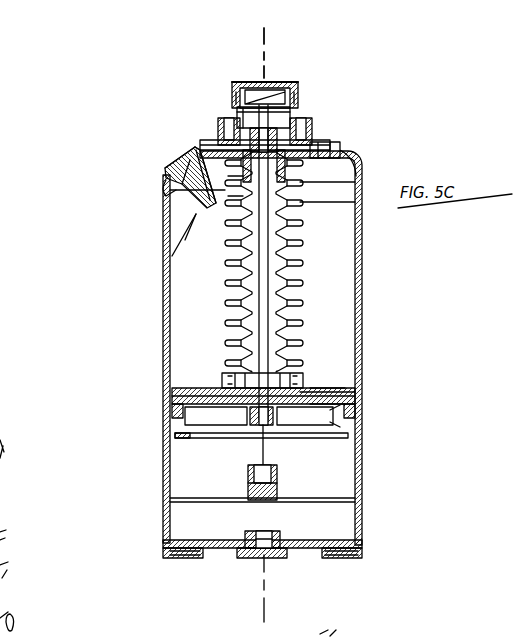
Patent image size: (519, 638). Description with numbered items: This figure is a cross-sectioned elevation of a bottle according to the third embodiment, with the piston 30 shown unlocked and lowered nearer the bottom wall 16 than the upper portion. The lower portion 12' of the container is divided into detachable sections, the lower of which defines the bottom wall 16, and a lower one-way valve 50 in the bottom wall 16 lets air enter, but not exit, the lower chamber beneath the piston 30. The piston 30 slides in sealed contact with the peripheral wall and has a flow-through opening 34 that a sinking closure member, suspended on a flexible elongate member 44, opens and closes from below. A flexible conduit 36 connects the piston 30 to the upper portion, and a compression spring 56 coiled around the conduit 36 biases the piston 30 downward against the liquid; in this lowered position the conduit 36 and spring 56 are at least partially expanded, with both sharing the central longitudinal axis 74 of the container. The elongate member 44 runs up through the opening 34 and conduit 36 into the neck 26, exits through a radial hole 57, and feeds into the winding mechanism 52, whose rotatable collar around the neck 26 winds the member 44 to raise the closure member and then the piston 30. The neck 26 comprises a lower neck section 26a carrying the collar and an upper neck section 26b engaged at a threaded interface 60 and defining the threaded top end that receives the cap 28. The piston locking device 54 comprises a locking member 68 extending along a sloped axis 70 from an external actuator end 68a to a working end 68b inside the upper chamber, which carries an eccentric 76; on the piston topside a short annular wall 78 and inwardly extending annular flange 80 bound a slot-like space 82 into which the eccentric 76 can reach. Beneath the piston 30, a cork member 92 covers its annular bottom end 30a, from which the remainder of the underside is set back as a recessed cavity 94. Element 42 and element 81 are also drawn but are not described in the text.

The lower portion 12' is at (289, 348).
The bottom wall 16 is at (218, 550).
The neck 26 is at (287, 90).
The lower neck section 26a is at (283, 137).
The upper neck section 26b is at (292, 112).
The cap 28 is at (234, 83).
The piston 30 is at (338, 424).
The annular bottom end 30a is at (178, 434).
The flow-through opening 34 is at (255, 416).
The flexible conduit 36 is at (292, 290).
The bracket 42 is at (342, 146).
The flexible elongate member 44 is at (268, 455).
The lower one-way valve 50 is at (280, 549).
The winding mechanism 52 is at (209, 127).
The piston locking device 54 is at (155, 166).
The compression spring 56 is at (296, 252).
The radial hole 57 is at (302, 122).
The threaded interface 60 is at (231, 93).
The locking member 68 is at (176, 198).
The actuator end 68a is at (170, 155).
The working end 68b is at (222, 200).
The sloped axis 70 is at (142, 118).
The central longitudinal axis 74 is at (270, 43).
The eccentric 76 is at (196, 214).
The short annular wall 78 is at (360, 387).
The inwardly extending annular flange 80 is at (340, 392).
The plate edge 81 is at (318, 390).
The slot-like space 82 is at (360, 404).
The cork member 92 is at (176, 452).
The recessed cavity 94 is at (218, 416).